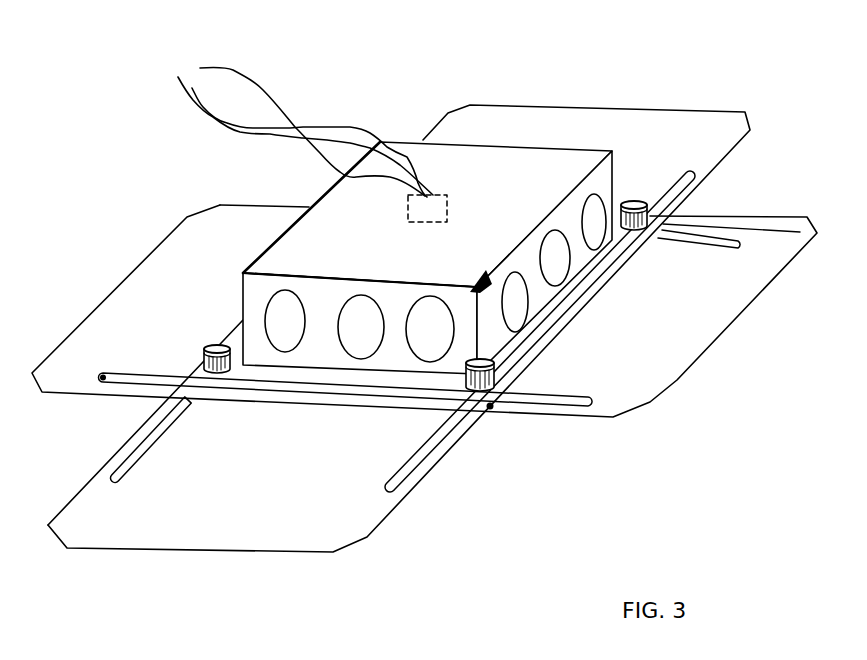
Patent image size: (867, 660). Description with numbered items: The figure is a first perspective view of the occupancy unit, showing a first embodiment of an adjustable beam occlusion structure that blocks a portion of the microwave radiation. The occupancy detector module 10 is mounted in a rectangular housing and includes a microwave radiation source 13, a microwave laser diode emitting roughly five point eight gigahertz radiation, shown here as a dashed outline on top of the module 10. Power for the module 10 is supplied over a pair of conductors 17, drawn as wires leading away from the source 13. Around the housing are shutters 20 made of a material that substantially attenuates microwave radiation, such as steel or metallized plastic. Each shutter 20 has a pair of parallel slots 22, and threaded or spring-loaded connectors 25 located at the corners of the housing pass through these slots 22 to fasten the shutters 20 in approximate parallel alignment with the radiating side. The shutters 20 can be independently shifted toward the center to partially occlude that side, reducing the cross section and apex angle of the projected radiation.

The occupancy detector module 10 is at (408, 142).
The microwave radiation source 13 is at (408, 208).
The pair of conductors 17 is at (295, 127).
The shutters 20 is at (147, 255).
The parallel slots 22 is at (147, 443).
The connectors 25 is at (492, 408).